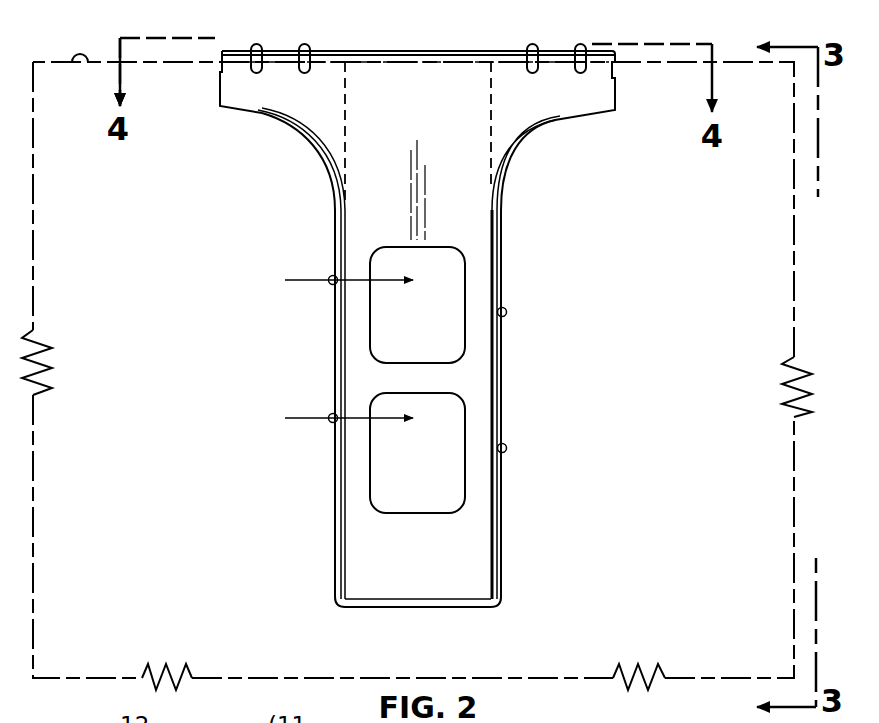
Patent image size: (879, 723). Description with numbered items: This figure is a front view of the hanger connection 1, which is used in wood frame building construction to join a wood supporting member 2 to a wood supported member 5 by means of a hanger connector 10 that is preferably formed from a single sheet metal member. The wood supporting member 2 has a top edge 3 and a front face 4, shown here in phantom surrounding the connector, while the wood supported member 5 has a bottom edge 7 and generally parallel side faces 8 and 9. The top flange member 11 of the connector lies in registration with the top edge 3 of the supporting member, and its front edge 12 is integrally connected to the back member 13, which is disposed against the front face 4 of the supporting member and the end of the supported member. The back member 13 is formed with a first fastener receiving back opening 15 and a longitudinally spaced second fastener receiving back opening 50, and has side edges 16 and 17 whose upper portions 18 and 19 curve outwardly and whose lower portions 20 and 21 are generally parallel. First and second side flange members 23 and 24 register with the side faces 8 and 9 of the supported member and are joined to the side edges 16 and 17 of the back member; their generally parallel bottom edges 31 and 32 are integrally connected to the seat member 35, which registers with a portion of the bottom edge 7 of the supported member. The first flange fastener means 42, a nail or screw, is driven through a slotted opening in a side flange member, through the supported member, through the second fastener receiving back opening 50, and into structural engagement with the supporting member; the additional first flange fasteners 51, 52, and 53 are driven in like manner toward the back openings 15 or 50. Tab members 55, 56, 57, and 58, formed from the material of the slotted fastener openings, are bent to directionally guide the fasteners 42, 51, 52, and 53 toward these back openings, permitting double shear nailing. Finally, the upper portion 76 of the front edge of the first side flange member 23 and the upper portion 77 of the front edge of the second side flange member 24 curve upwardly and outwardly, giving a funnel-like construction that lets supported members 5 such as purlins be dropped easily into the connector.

The hanger connection 1 is at (345, 40).
The wood supporting member 2 is at (48, 52).
The top edge 3 is at (80, 62).
The front face 4 is at (76, 230).
The wood supported member 5 is at (497, 93).
The bottom edge 7 is at (440, 607).
The side face 8 is at (345, 70).
The side face 9 is at (500, 140).
The hanger connector 10 is at (218, 100).
The top flange member 11 is at (372, 52).
The front edge 12 is at (438, 64).
The back member 13 is at (620, 95).
The first fastener receiving back opening 15 is at (548, 312).
The side edge 16 is at (346, 378).
The side edge 17 is at (489, 372).
The upper portion 18 is at (296, 116).
The upper portion 19 is at (548, 105).
The lower portion 20 is at (340, 562).
The lower portion 21 is at (490, 552).
The first side flange member 23 is at (333, 343).
The second side flange member 24 is at (502, 357).
The bottom edge 31 is at (345, 597).
The bottom edge 32 is at (490, 594).
The seat member 35 is at (410, 597).
The first flange fastener means 42 is at (293, 418).
The second fastener receiving back opening 50 is at (550, 448).
The first flange fastener 51 is at (295, 280).
The first flange fastener 52 is at (530, 448).
The first flange fastener 53 is at (530, 312).
The tab member 55 is at (328, 424).
The tab member 56 is at (328, 286).
The tab member 57 is at (505, 454).
The tab member 58 is at (505, 318).
The upper portion 76 is at (305, 140).
The upper portion 77 is at (518, 148).